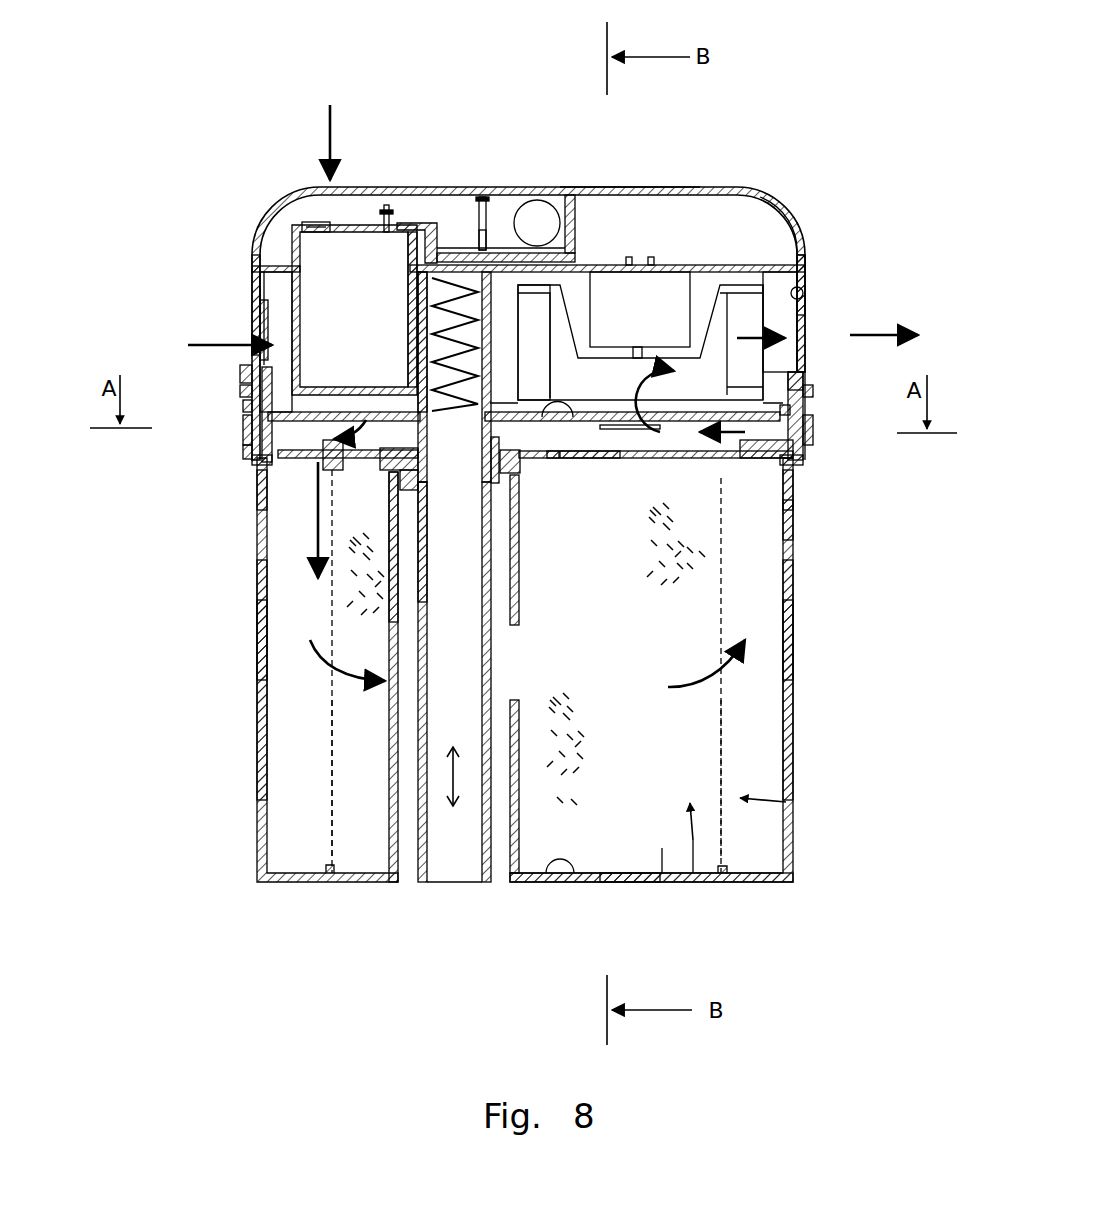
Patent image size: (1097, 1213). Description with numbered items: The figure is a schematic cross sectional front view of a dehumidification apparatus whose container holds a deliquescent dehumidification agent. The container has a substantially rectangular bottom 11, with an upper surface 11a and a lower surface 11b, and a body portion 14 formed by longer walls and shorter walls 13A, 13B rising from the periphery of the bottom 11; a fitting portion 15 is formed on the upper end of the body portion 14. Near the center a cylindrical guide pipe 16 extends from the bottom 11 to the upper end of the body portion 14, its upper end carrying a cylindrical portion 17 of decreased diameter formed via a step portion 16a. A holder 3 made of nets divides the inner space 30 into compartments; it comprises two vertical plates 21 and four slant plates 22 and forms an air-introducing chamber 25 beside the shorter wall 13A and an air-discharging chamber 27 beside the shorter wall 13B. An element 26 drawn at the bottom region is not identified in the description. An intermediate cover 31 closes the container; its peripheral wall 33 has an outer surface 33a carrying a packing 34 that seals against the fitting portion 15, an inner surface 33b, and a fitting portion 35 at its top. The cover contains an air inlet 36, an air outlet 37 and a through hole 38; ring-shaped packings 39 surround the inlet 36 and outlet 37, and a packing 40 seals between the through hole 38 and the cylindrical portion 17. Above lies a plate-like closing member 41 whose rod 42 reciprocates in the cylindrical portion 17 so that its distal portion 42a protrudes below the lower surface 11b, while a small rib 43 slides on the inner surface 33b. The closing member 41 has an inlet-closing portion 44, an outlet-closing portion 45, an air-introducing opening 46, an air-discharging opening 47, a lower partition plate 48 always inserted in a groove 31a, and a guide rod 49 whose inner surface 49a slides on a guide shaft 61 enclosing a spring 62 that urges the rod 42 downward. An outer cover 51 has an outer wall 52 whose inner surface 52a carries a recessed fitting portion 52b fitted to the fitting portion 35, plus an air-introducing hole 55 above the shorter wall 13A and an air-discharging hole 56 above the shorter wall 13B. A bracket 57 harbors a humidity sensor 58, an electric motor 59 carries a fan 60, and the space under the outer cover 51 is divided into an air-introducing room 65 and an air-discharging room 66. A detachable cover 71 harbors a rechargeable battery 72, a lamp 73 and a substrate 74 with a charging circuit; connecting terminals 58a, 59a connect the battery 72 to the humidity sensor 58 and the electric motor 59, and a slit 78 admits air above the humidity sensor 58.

The holder 3 is at (745, 800).
The bottom 11 is at (580, 884).
The upper surface of the bottom 11a is at (558, 884).
The lower surface of the bottom 11b is at (617, 884).
The shorter wall 13A is at (266, 715).
The shorter wall 13B is at (785, 712).
The body portion 14 is at (812, 590).
The fitting portion 15 is at (797, 454).
The guide pipe 16 is at (393, 872).
The step portion 16a is at (428, 500).
The cylindrical portion 17 is at (432, 478).
The vertical plates 21 is at (330, 780).
The slant plates 22 is at (617, 774).
The air-introducing chamber 25 is at (268, 660).
The drain passage 26 is at (662, 850).
The air-discharging chamber 27 is at (786, 665).
The inner space 30 is at (693, 845).
The intermediate cover 31 is at (655, 458).
The groove 31a is at (564, 480).
The peripheral wall 33 is at (250, 440).
The outer surface of the peripheral wall 33a is at (250, 455).
The inner surface of the peripheral wall 33b is at (250, 415).
The packing 34 is at (260, 468).
The fitting portion 35 is at (242, 394).
The air inlet 36 is at (305, 462).
The air outlet 37 is at (795, 520).
The through hole 38 is at (484, 430).
The ring-shaped packing 39 is at (262, 494).
The packing 40 is at (390, 505).
The closing member 41 is at (588, 460).
The rod 42 is at (487, 878).
The distal portion 42a is at (437, 884).
The small rib 43 is at (241, 368).
The inlet-closing portion 44 is at (318, 400).
The outlet-closing portion 45 is at (797, 358).
The air-introducing opening 46 is at (378, 416).
The air-discharging opening 47 is at (614, 458).
The lower partition plate 48 is at (545, 472).
The guide rod 49 is at (412, 355).
The inner surface of the guide rod 49a is at (518, 392).
The outer cover 51 is at (770, 285).
The outer wall 52 is at (806, 308).
The inner surface of the outer wall 52a is at (257, 300).
The recessed fitting portion 52b is at (250, 388).
The air-introducing hole 55 is at (259, 333).
The air-discharging hole 56 is at (804, 291).
The bracket 57 is at (292, 202).
The humidity sensor 58 is at (280, 266).
The connecting terminal 58a is at (456, 262).
The electric motor 59 is at (665, 300).
The connecting terminal 59a is at (548, 205).
The fan 60 is at (705, 300).
The guide shaft 61 is at (310, 222).
The spring 62 is at (430, 222).
The air-introducing room 65 is at (276, 298).
The air-discharging room 66 is at (790, 258).
The detachable cover 71 is at (620, 188).
The rechargeable battery 72 is at (571, 210).
The lamp 73 is at (481, 197).
The substrate 74 is at (486, 245).
The slit 78 is at (386, 206).